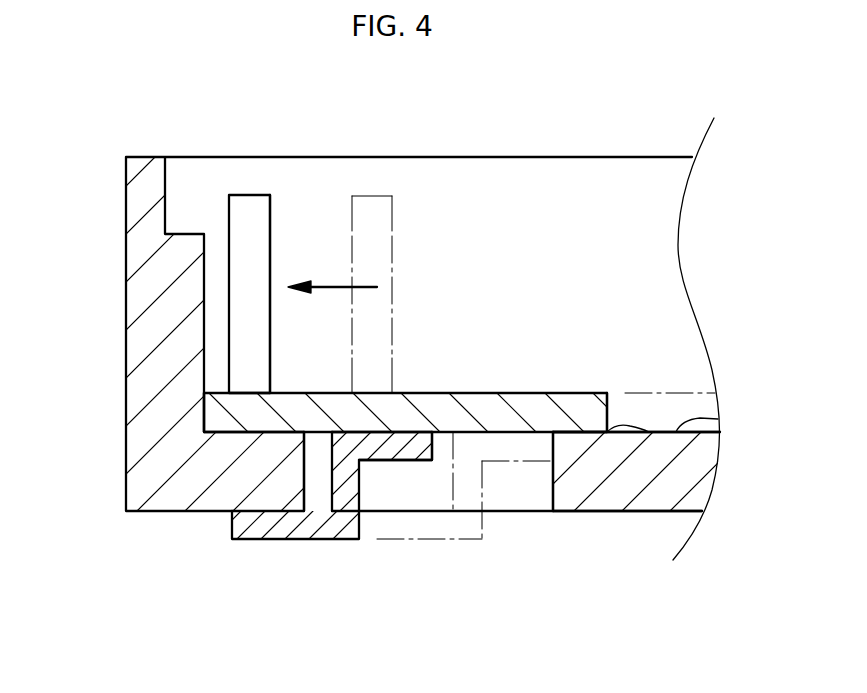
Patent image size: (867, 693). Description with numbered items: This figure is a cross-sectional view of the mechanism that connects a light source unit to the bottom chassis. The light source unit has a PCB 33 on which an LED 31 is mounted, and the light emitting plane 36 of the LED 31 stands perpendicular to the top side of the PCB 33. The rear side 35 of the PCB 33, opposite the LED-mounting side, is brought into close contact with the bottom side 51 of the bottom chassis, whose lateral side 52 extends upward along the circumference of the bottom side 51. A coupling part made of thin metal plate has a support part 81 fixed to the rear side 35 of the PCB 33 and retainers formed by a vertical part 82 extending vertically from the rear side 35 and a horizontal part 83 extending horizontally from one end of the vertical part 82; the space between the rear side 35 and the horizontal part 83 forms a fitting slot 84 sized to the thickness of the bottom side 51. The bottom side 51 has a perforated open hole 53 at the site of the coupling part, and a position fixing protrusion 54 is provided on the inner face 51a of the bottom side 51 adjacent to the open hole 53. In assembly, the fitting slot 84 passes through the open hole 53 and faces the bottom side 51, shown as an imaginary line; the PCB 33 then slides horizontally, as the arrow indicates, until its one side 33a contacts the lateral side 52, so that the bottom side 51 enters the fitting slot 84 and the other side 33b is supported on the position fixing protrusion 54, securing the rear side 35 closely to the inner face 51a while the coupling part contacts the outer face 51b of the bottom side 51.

The LED 31 is at (255, 213).
The light emitting plane 36 is at (272, 231).
The lateral side 52 is at (150, 268).
The PCB 33 is at (517, 405).
The one side of the PCB 33a is at (203, 407).
The other side of the PCB 33b is at (608, 410).
The position fixing protrusion 54 is at (617, 432).
The bottom side 51 is at (690, 473).
The inner face 51a is at (675, 432).
The base bottom surface 51b is at (630, 511).
The open hole 53 is at (553, 490).
The rear side of the PCB 35 is at (492, 433).
The support part 81 is at (407, 458).
The vertical part 82 is at (357, 480).
The horizontal part 83 is at (253, 530).
The fitting slot 84 is at (327, 463).